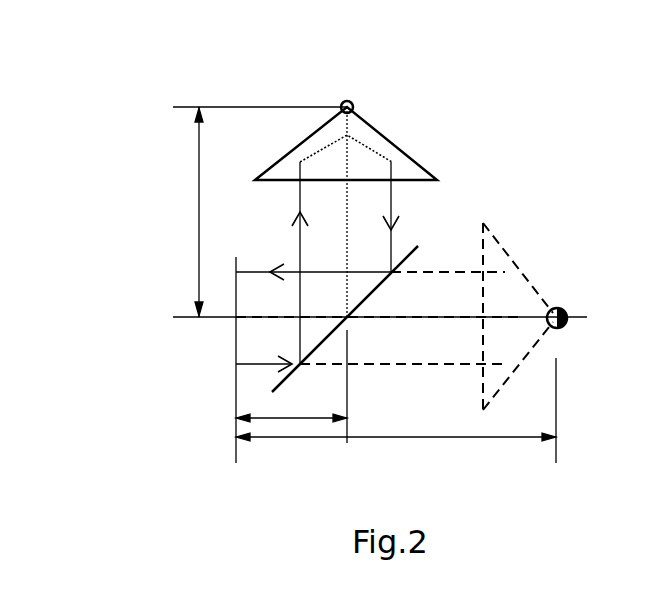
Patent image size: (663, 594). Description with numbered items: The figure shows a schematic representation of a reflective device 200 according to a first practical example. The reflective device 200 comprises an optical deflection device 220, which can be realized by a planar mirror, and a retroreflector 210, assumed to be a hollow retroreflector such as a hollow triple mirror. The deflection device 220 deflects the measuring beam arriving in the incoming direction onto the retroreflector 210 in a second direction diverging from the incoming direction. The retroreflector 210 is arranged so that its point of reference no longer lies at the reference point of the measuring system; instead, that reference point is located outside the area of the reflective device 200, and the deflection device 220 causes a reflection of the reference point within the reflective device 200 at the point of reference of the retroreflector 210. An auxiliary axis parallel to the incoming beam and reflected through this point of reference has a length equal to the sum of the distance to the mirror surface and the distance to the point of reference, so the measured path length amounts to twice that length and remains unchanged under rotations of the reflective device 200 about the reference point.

The reflective device 200 is at (151, 98).
The retroreflector 210 is at (390, 140).
The optical deflection device 220 is at (393, 270).